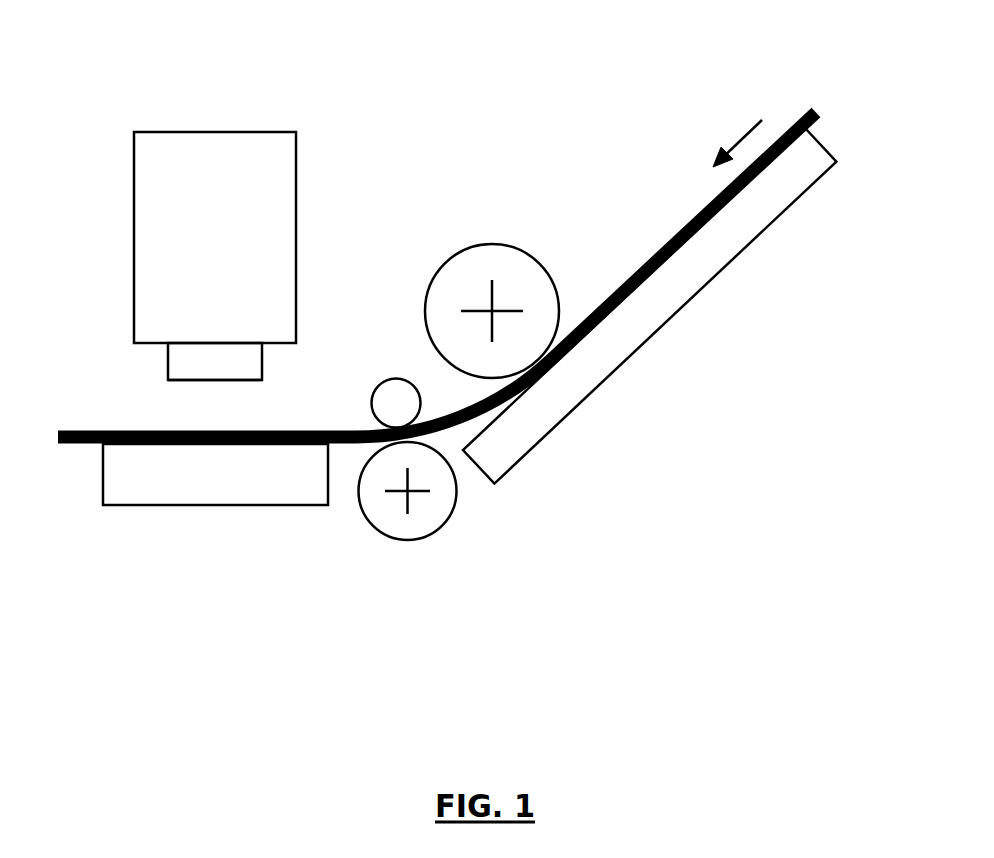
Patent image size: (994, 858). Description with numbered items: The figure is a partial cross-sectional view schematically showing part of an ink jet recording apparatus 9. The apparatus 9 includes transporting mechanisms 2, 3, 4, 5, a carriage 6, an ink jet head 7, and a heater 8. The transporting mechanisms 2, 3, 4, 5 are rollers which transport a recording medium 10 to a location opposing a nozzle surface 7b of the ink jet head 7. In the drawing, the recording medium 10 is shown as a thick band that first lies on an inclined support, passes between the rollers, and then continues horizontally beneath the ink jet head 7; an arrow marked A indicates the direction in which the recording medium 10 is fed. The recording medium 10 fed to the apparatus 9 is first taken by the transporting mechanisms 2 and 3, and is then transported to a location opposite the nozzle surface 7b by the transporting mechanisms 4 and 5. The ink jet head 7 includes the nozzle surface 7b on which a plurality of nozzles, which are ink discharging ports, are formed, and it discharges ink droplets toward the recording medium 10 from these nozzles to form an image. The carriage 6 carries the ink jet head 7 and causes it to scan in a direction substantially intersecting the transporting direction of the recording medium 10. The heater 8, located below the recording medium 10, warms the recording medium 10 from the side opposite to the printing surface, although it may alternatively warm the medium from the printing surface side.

The transporting mechanism 2 is at (675, 302).
The transporting mechanism 3 is at (494, 253).
The transporting mechanism 4 is at (407, 535).
The transporting mechanism 5 is at (394, 388).
The carriage 6 is at (155, 216).
The ink jet head 7 is at (172, 362).
The nozzle surface 7b is at (184, 380).
The heater 8 is at (112, 478).
The ink jet recording apparatus 9 is at (667, 59).
The recording medium 10 is at (662, 240).
The feed direction A is at (745, 133).